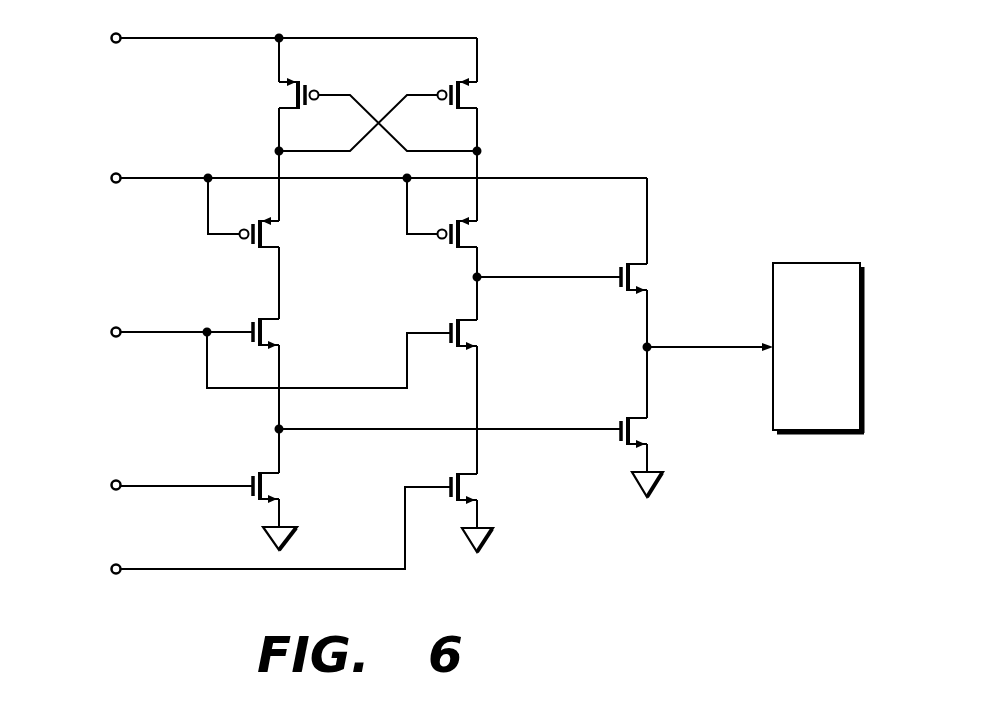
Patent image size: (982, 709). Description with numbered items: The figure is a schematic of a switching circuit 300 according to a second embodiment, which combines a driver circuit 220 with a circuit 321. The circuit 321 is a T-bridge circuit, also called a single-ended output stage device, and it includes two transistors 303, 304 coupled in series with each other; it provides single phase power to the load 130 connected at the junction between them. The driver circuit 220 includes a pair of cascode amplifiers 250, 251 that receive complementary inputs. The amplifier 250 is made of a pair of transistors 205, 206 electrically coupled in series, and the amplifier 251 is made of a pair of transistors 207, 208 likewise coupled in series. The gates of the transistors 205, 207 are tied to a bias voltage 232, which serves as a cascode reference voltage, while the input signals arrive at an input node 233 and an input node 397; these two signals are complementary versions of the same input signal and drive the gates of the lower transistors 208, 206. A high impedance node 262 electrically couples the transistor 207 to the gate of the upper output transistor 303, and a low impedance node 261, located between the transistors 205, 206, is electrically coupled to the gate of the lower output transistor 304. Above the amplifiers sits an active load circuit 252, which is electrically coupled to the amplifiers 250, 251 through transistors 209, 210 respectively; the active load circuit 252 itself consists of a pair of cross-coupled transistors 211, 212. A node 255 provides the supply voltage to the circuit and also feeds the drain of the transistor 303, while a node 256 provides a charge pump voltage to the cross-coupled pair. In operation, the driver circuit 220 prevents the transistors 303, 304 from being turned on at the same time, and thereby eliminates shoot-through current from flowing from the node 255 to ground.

The load 130 is at (848, 402).
The transistor 205 is at (283, 335).
The transistor 206 is at (283, 489).
The transistor 207 is at (481, 336).
The transistor 208 is at (481, 490).
The transistor 209 is at (283, 237).
The transistor 210 is at (481, 237).
The cross-coupled transistor 211 is at (287, 96).
The cross-coupled transistor 212 is at (467, 98).
The driver circuit 220 is at (222, 419).
The bias voltage 232 is at (116, 337).
The input node 233 is at (116, 574).
The cascode amplifier 250 is at (232, 524).
The cascode amplifier 251 is at (557, 517).
The active load circuit 252 is at (511, 49).
The node 255 is at (116, 183).
The node 256 is at (116, 43).
The low impedance node 261 is at (283, 426).
The high impedance node 262 is at (471, 277).
The switching circuit 300 is at (622, 627).
The transistor 303 is at (651, 280).
The transistor 304 is at (651, 434).
The T-bridge circuit 321 is at (696, 191).
The input node 397 is at (116, 490).